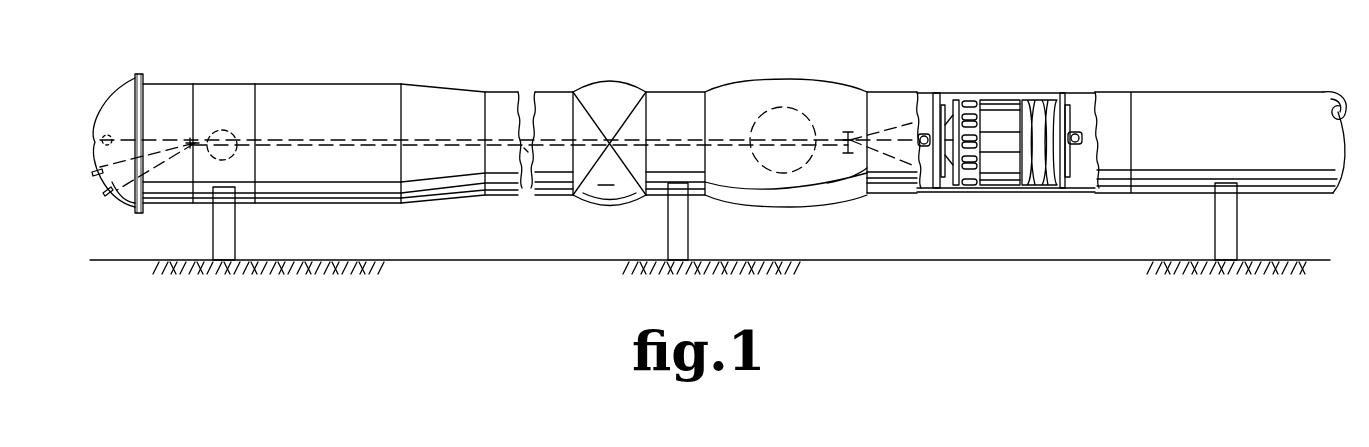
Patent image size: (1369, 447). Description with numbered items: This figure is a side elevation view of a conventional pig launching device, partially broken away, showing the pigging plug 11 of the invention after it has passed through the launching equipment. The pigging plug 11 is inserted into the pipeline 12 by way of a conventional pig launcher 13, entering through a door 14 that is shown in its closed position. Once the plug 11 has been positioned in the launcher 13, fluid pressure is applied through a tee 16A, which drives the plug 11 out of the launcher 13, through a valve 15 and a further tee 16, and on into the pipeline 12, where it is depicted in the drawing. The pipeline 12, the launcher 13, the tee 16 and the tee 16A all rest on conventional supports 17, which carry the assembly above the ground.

The pigging plug 11 is at (1005, 97).
The pipeline 12 is at (1205, 92).
The pig launcher 13 is at (322, 85).
The door 14 is at (115, 90).
The valve 15 is at (611, 63).
The tee 16 is at (791, 79).
The tee 16A is at (226, 130).
The support 17 is at (228, 230).